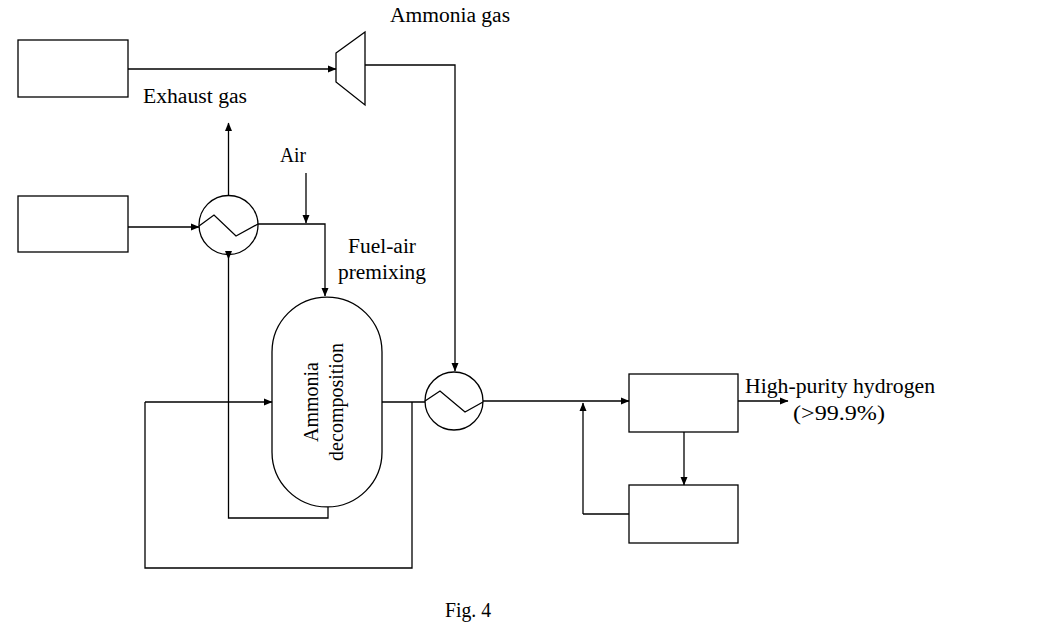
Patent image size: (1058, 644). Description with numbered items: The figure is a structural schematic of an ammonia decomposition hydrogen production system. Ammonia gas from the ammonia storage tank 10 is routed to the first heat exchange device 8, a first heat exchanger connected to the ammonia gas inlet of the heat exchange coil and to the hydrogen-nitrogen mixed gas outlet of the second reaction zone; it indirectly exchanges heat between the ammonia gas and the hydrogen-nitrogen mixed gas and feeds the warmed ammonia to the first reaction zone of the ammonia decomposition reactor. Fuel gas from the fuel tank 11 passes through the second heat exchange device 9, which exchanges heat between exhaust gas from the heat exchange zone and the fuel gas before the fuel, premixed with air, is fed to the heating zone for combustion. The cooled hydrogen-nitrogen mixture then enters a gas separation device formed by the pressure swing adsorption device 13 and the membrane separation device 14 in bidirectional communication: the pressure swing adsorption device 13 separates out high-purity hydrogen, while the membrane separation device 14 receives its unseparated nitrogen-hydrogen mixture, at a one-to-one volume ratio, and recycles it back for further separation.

The first heat exchange device 8 is at (457, 411).
The second heat exchange device 9 is at (224, 223).
The ammonia storage tank 10 is at (73, 68).
The fuel tank 11 is at (73, 224).
The pressure swing adsorption device 13 is at (683, 403).
The membrane separation device 14 is at (683, 514).